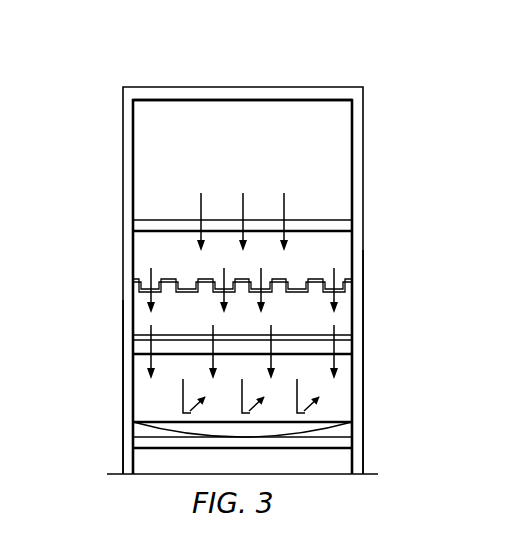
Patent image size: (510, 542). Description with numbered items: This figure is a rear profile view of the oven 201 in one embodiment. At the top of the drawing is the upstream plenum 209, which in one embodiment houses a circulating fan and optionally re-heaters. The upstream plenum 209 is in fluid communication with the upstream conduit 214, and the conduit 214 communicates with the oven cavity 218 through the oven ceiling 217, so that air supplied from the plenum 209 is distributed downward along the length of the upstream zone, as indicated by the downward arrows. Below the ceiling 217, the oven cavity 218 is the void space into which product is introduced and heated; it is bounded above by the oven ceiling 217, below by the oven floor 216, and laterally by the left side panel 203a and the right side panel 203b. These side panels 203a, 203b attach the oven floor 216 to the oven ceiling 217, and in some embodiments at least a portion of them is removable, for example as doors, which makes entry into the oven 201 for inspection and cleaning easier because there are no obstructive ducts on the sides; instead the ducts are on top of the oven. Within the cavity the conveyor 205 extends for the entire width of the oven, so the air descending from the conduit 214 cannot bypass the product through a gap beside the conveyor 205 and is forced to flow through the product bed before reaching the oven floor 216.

The oven 201 is at (269, 72).
The left side panel 203a is at (122, 302).
The right side panel 203b is at (365, 258).
The conveyor 205 is at (142, 335).
The upstream plenum 209 is at (262, 150).
The upstream conduit 214 is at (317, 250).
The oven floor 216 is at (157, 422).
The oven ceiling 217 is at (170, 276).
The oven cavity 218 is at (320, 327).